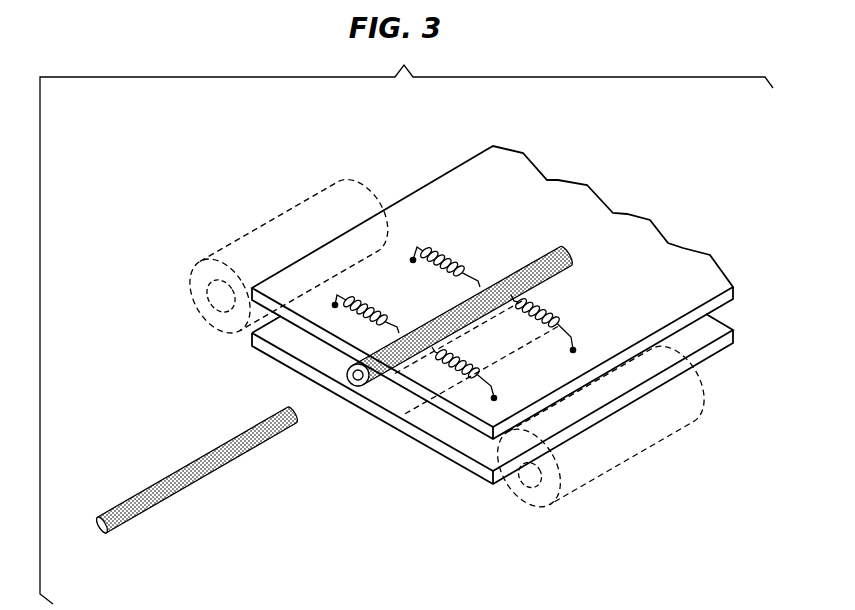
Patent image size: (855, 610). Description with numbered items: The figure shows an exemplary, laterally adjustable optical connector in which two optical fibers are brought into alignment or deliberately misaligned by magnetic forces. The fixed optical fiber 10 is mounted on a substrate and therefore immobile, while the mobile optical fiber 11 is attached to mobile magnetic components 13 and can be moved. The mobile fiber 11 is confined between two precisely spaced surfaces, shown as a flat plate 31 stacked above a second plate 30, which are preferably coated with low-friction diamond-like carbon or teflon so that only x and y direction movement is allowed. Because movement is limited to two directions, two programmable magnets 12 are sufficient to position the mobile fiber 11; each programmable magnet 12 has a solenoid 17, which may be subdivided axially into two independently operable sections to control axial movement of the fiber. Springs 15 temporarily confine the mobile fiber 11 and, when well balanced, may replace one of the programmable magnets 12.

The optical fiber 10 is at (168, 479).
The mobile optical fiber 11 is at (574, 266).
The programmable magnet 12 is at (211, 254).
The mobile magnetic component 13 is at (496, 275).
The spring 15 is at (550, 311).
The solenoid 17 is at (197, 306).
The lower substrate 30 is at (433, 445).
The flat plate 31 is at (478, 440).